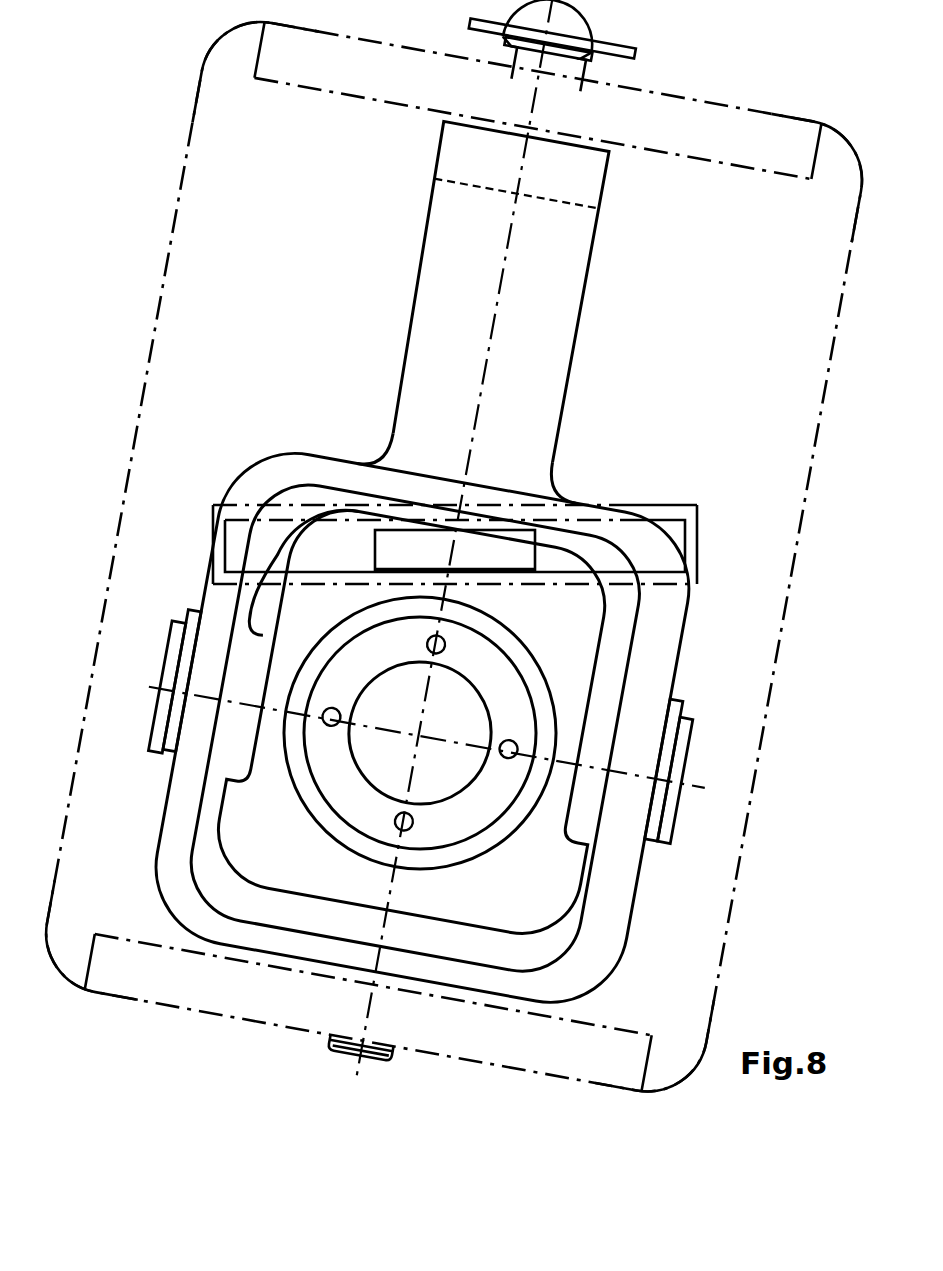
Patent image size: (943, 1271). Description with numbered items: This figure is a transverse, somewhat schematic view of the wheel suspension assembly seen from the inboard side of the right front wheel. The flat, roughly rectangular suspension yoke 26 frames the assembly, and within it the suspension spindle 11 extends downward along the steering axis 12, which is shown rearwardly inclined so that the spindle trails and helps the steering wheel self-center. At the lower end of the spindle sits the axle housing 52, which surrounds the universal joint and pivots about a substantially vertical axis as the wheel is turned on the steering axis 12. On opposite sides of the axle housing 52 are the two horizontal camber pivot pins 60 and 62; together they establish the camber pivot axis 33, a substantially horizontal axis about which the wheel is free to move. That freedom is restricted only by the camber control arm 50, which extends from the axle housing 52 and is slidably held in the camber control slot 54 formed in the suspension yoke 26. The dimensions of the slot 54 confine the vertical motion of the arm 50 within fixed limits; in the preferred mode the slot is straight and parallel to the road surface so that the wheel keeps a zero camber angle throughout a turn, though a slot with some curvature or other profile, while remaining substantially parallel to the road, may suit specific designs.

The suspension yoke 26 is at (197, 100).
The suspension spindle 11 is at (598, 270).
The steering axis 12 is at (490, 397).
The axle housing 52 is at (563, 880).
The camber pivot axis 33 is at (697, 780).
The camber pivot pin 60 is at (150, 715).
The camber pivot pin 62 is at (680, 812).
The camber control slot 54 is at (703, 522).
The camber control arm 50 is at (377, 545).